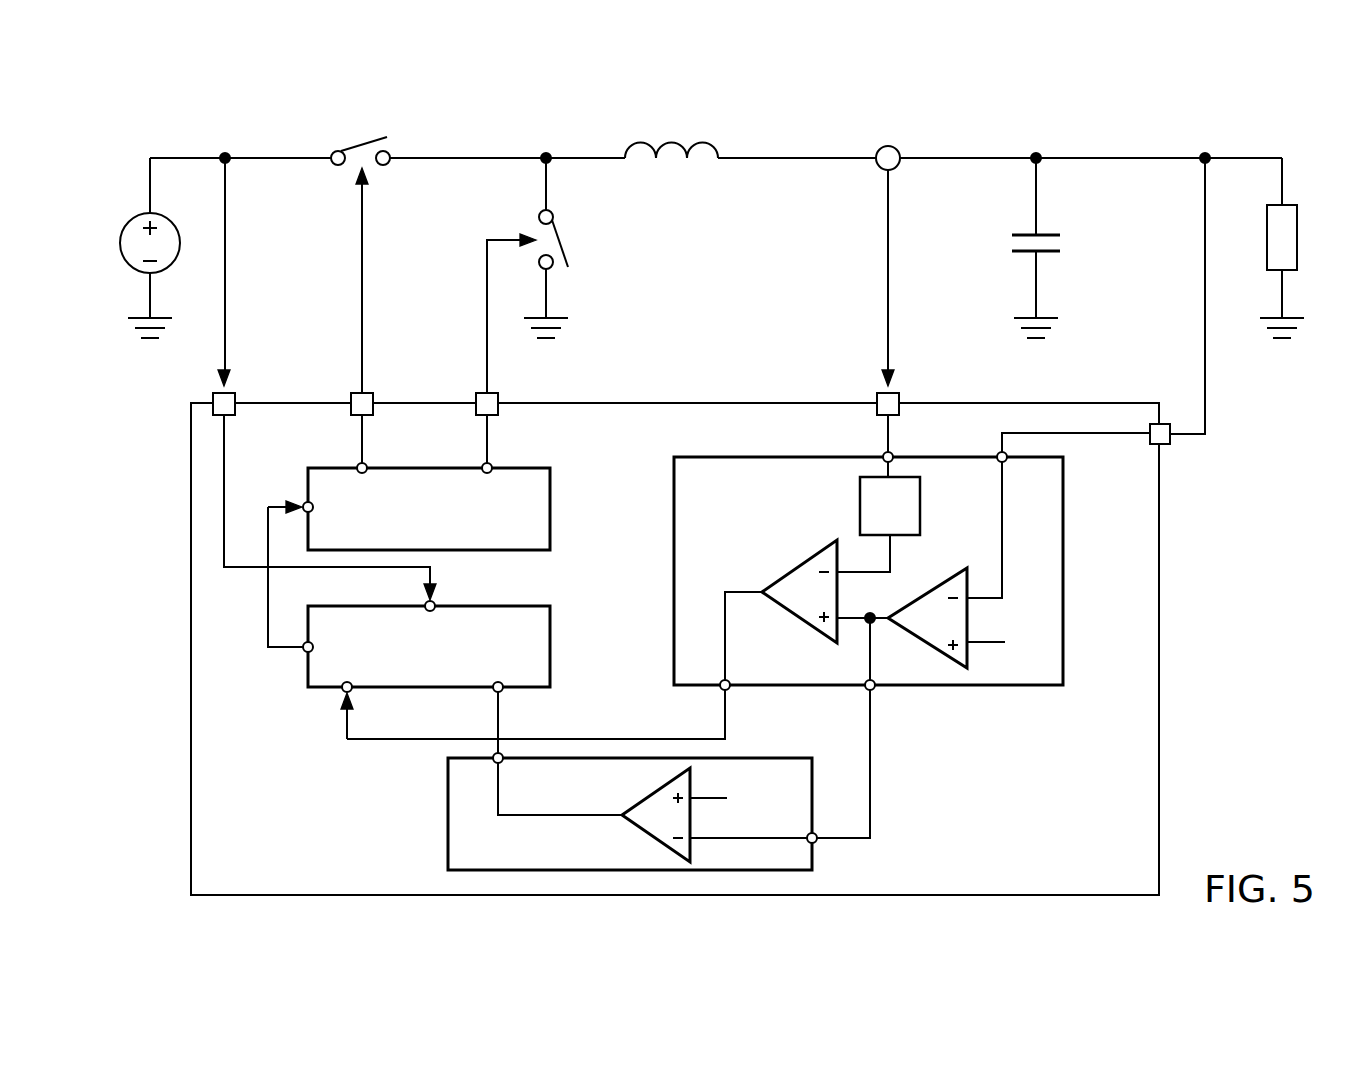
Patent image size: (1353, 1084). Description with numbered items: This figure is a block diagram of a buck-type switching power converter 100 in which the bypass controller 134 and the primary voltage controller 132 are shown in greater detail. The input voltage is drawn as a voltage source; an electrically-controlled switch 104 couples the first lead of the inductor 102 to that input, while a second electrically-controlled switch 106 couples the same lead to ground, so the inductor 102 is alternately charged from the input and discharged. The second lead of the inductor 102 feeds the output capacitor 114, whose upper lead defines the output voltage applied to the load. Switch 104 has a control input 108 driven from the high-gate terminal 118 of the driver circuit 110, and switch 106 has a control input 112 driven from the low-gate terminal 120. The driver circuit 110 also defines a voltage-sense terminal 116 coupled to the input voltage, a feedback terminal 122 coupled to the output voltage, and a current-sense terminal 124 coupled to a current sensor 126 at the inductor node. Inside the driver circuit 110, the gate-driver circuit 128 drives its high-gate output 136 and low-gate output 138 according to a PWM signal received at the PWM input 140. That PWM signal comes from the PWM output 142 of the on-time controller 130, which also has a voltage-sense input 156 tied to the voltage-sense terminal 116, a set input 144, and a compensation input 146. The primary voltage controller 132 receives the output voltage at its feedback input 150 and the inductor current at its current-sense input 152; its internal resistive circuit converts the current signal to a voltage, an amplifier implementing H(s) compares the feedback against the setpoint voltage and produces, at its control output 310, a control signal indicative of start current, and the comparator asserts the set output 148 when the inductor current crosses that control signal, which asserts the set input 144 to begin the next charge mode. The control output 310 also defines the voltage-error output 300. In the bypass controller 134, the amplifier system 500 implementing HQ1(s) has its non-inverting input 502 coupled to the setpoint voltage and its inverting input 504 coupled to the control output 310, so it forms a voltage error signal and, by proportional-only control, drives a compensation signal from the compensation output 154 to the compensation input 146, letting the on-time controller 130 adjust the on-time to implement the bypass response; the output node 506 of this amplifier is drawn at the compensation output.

The switching power converter 100 is at (137, 135).
The inductor 102 is at (677, 130).
The electrically-controlled switch 104 is at (362, 130).
The electrically-controlled switch 106 is at (575, 250).
The control input 108 is at (357, 178).
The driver circuit 110 is at (191, 548).
The control input 112 is at (513, 238).
The output capacitor 114 is at (1052, 228).
The voltage-sense terminal 116 is at (215, 390).
The high-gate terminal 118 is at (367, 390).
The low-gate terminal 120 is at (492, 390).
The feedback terminal 122 is at (1163, 448).
The current-sense terminal 124 is at (892, 390).
The current sensor 126 is at (895, 148).
The gate-driver circuit 128 is at (552, 513).
The on-time controller 130 is at (552, 657).
The primary voltage controller 132 is at (674, 567).
The bypass controller 134 is at (448, 810).
The high-gate output 136 is at (365, 465).
The low-gate output 138 is at (490, 465).
The PWM input 140 is at (300, 500).
The PWM output 142 is at (305, 650).
The set input 144 is at (345, 690).
The compensation input 146 is at (495, 690).
The set output 148 is at (727, 682).
The feedback input 150 is at (1000, 453).
The current-sense input 152 is at (885, 453).
The compensation output 154 is at (500, 755).
The voltage-sense input 156 is at (435, 603).
The voltage-error output 300 is at (929, 588).
The control output 310 is at (877, 625).
The amplifier system 500 is at (642, 830).
The non-inverting input 502 is at (698, 795).
The inverting input 504 is at (693, 843).
The amplifier output 506 is at (620, 813).